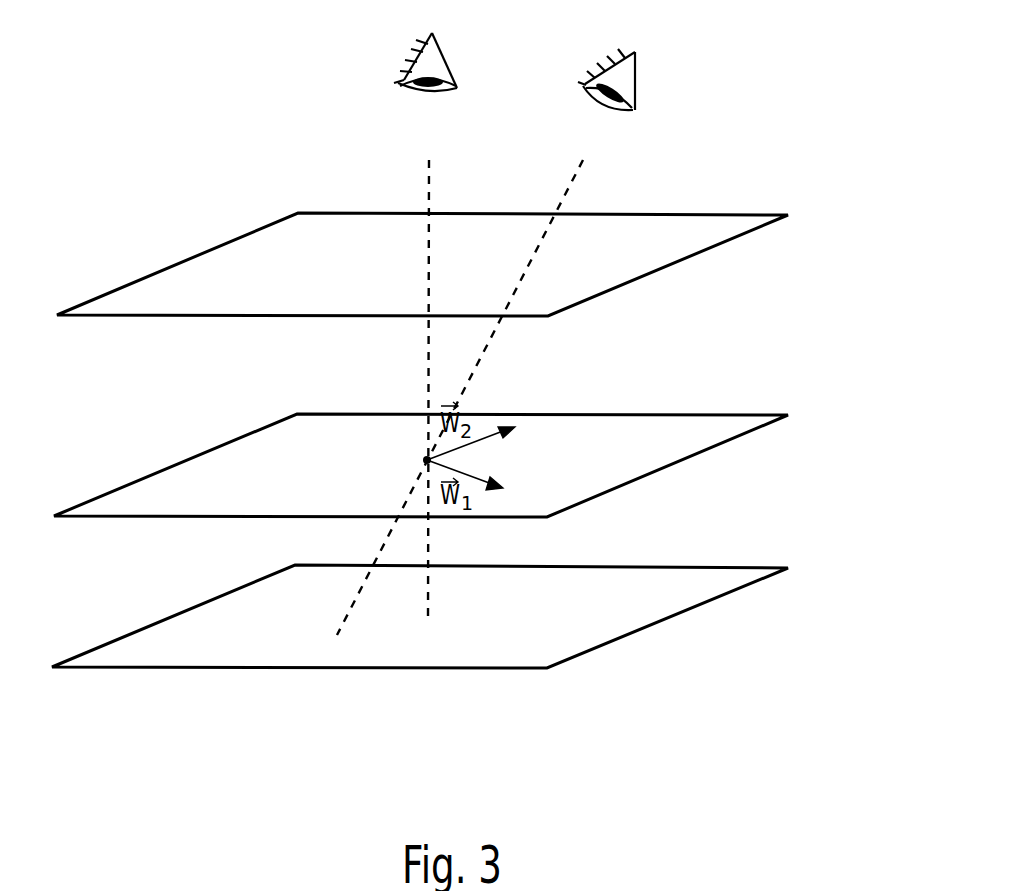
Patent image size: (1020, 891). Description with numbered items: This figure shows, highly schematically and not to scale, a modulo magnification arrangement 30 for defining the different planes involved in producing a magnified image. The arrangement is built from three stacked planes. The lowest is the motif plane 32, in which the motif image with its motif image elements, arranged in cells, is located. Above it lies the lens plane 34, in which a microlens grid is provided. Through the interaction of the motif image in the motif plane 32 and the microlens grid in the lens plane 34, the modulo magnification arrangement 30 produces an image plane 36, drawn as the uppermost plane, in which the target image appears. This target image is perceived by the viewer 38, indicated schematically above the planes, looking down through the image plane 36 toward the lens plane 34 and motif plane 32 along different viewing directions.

The modulo magnification arrangement 30 is at (120, 168).
The motif plane 32 is at (753, 585).
The lens plane 34 is at (753, 433).
The image plane 36 is at (753, 233).
The viewer 38 is at (443, 60).